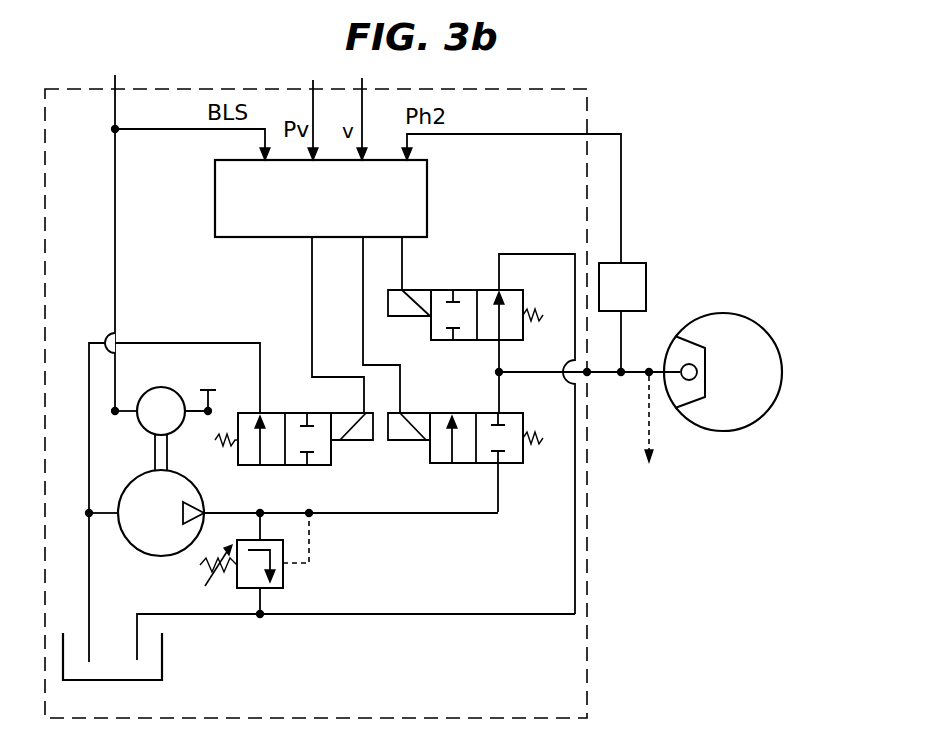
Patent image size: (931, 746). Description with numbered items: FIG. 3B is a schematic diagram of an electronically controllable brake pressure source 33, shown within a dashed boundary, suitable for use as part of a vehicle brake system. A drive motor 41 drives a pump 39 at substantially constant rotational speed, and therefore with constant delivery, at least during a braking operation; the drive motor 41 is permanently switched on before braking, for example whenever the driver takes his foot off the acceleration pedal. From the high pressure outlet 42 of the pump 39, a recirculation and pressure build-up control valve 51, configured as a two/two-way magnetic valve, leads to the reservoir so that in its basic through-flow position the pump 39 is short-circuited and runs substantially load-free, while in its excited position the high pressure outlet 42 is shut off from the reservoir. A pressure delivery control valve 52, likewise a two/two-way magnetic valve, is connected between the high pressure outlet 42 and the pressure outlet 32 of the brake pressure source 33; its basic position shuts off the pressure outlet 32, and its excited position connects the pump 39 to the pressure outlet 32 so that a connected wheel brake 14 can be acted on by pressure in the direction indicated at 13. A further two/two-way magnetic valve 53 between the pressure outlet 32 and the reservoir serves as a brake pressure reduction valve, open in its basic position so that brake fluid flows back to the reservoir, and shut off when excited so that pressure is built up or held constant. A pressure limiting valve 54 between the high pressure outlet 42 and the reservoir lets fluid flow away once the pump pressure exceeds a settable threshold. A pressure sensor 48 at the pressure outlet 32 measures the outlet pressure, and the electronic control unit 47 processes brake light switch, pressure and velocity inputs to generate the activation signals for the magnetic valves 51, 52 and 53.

The controllable brake pressure source 33 is at (520, 88).
The electronic control unit 47 is at (427, 200).
The pressure sensor 48 is at (639, 263).
The 2/2-way magnetic valve 53 is at (466, 283).
The pressure delivery control valve 52 is at (464, 408).
The recirculation and pressure build-up control valve 51 is at (278, 412).
The pressure outlet 32 is at (588, 380).
The brake pressure direction 13 is at (651, 435).
The wheel brake 14 is at (725, 318).
The drive motor 41 is at (186, 396).
The pump 39 is at (192, 478).
The high pressure outlet 42 is at (262, 511).
The pressure limiting valve 54 is at (283, 585).